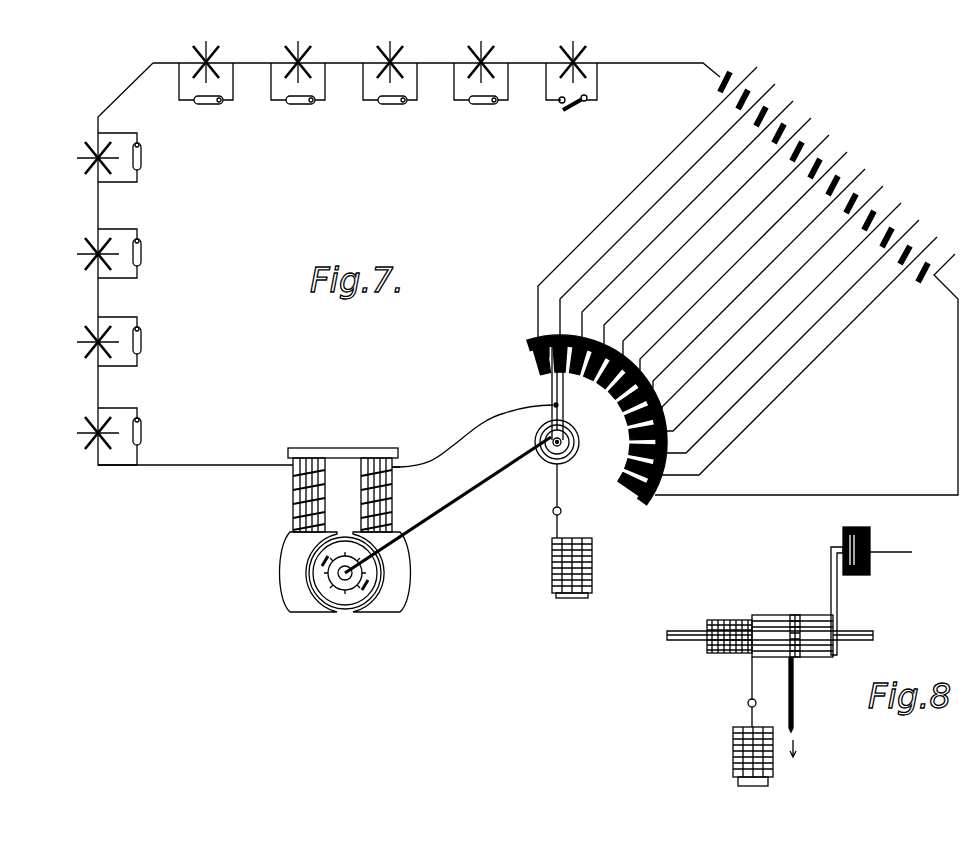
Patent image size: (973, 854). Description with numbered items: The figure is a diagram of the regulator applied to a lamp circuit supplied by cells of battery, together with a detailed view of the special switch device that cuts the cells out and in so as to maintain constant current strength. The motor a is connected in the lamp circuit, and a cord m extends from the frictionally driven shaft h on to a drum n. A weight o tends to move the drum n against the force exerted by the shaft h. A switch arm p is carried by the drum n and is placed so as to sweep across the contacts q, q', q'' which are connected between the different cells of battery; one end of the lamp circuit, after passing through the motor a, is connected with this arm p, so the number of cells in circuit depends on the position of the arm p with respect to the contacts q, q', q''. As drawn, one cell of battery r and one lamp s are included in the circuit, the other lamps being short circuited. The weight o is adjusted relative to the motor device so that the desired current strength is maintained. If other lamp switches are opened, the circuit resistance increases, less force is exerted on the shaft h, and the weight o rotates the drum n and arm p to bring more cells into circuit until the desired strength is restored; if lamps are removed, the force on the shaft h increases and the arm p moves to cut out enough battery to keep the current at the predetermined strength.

In FIG. 7, the motor a is at (343, 490).
In FIG. 7, the frictionally driven shaft h is at (345, 588).
In FIG. 7, the cord m is at (448, 505).
In FIG. 8, the cord m is at (792, 698).
In FIG. 7, the drum n is at (549, 458).
In FIG. 8, the drum n is at (770, 623).
In FIG. 7, the weight o is at (552, 563).
In FIG. 8, the weight o is at (733, 751).
In FIG. 7, the switch arm p is at (552, 394).
In FIG. 8, the switch arm p is at (831, 578).
In FIG. 7, the contacts q is at (523, 351).
In FIG. 8, the contacts q is at (859, 549).
In FIG. 7, the contacts q' is at (599, 406).
In FIG. 7, the contacts q'' is at (597, 420).
In FIG. 7, the cell of battery r is at (748, 267).
In FIG. 7, the lamp s is at (571, 69).